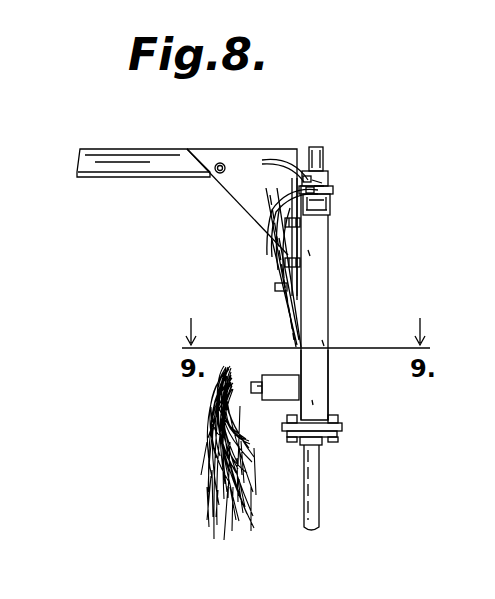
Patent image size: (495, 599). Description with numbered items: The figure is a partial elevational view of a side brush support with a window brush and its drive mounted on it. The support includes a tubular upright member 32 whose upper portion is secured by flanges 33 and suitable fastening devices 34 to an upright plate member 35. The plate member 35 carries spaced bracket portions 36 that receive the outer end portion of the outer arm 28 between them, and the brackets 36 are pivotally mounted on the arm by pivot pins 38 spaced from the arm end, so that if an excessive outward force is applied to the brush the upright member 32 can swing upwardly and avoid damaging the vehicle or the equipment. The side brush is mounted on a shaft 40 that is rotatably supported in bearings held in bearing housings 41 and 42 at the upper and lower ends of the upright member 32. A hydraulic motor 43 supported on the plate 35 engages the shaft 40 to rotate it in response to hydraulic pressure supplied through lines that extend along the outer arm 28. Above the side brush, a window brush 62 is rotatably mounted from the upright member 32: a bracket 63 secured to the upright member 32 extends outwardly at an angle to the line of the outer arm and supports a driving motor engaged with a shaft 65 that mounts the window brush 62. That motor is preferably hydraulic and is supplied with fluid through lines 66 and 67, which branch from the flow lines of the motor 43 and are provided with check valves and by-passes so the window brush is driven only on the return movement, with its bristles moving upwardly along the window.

The outer arm 28 is at (112, 157).
The tubular upright member 32 is at (326, 393).
The flange 33 is at (308, 249).
The fastening device 34 is at (290, 262).
The upright plate member 35 is at (290, 224).
The bracket portion 36 is at (246, 210).
The pivot pin 38 is at (217, 172).
The shaft 40 is at (320, 516).
The bearing housing 41 is at (330, 205).
The bearing housing 42 is at (335, 438).
The hydraulic motor 43 is at (323, 148).
The window brush 62 is at (211, 440).
The bracket 63 is at (277, 395).
The shaft 65 is at (327, 598).
The line 66 is at (276, 288).
The line 67 is at (293, 310).